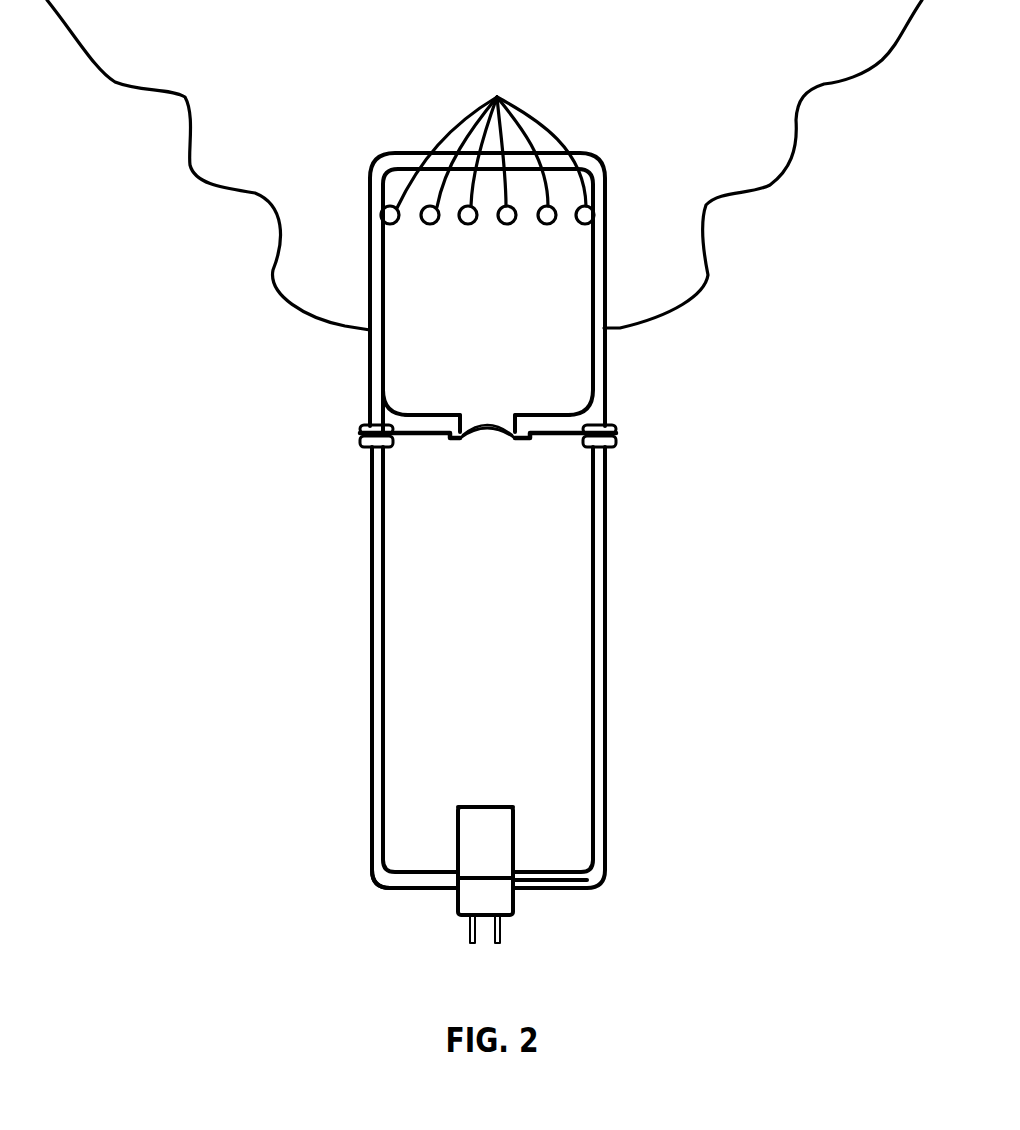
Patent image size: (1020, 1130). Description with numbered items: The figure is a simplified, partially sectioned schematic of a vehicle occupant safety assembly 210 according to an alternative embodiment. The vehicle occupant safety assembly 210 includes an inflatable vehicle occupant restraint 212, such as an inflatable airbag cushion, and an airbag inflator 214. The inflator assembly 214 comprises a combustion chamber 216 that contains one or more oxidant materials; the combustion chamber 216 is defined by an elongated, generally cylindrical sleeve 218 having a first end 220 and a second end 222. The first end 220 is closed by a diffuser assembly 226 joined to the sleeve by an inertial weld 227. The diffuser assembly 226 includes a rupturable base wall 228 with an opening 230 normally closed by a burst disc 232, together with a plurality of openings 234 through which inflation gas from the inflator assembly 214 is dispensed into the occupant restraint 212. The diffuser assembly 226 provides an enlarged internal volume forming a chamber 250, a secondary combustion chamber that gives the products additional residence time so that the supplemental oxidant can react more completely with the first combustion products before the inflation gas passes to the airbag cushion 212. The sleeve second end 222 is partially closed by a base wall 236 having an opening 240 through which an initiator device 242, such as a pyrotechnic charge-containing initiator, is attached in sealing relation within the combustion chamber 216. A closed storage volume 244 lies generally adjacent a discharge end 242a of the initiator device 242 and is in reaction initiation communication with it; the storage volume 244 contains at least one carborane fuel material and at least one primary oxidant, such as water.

The vehicle occupant safety assembly 210 is at (230, 538).
The inflatable vehicle occupant restraint 212 is at (187, 96).
The airbag inflator 214 is at (355, 760).
The combustion chamber 216 is at (520, 575).
The elongated generally cylindrical sleeve 218 is at (598, 727).
The first end 220 is at (630, 452).
The second end 222 is at (362, 905).
The diffuser assembly 226 is at (620, 169).
The inertial weld 227 is at (345, 430).
The rupturable base wall 228 is at (558, 423).
The opening 230 is at (446, 425).
The burst disc 232 is at (479, 437).
The plurality of openings 234 is at (487, 141).
The base wall 236 is at (552, 875).
The opening 240 is at (452, 885).
The initiator device 242 is at (472, 882).
The discharge end 242a is at (483, 872).
The closed storage volume 244 is at (492, 830).
The chamber 250 is at (490, 307).